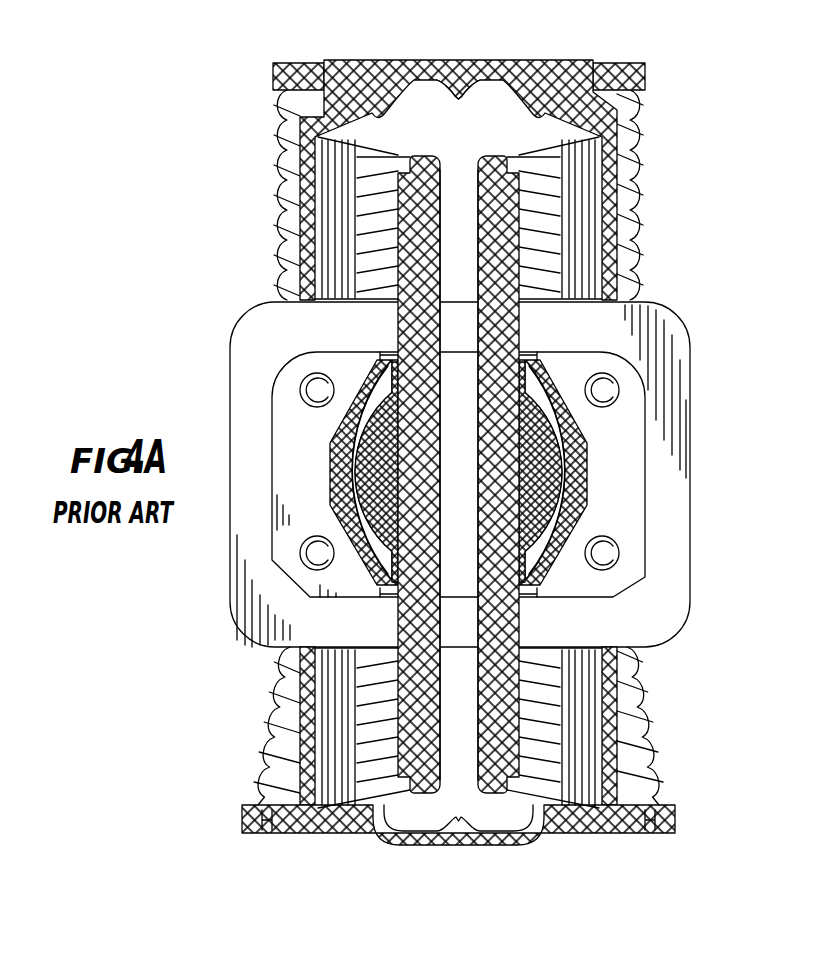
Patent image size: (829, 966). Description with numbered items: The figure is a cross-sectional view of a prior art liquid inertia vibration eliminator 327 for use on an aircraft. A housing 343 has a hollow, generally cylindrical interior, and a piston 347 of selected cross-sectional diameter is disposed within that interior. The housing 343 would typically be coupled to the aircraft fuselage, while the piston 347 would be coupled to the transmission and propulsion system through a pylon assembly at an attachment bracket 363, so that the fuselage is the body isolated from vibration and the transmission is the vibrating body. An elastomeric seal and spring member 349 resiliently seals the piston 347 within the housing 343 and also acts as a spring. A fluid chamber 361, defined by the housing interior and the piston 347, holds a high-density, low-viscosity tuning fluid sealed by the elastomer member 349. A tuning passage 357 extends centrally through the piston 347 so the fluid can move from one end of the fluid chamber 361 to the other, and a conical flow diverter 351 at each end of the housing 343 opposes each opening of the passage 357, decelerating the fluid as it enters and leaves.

The liquid inertia vibration eliminator 327 is at (193, 289).
The housing 343 is at (623, 830).
The piston 347 is at (421, 165).
The elastomeric seal and spring member 349 is at (327, 212).
The conical flow diverter 351 is at (430, 77).
The tuning port or passage 357 is at (477, 180).
The fluid chamber 361 is at (390, 108).
The attachment bracket 363 is at (290, 383).